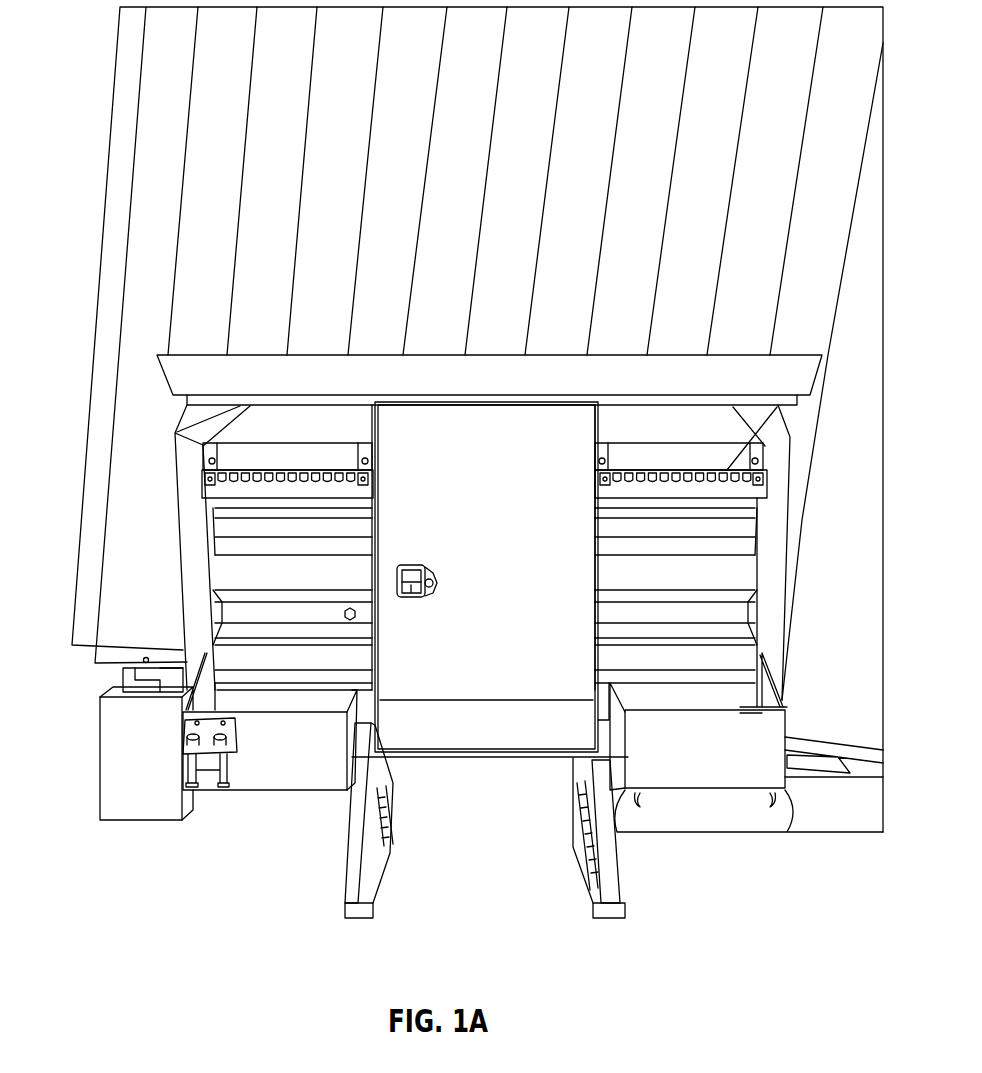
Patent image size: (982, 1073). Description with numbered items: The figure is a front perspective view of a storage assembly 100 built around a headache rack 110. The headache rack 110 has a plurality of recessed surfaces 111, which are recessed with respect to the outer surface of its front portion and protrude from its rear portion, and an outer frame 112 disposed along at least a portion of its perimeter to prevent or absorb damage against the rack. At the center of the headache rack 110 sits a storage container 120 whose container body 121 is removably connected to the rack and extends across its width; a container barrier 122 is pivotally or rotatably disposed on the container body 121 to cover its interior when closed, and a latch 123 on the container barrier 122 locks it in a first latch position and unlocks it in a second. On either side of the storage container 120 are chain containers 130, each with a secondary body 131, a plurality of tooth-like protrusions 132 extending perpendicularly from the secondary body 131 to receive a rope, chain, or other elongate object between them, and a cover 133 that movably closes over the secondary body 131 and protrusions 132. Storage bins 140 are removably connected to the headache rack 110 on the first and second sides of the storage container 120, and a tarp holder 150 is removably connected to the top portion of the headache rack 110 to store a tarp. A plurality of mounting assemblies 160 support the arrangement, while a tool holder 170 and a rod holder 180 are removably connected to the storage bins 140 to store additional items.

The storage assembly 100 is at (214, 224).
The headache rack 110 is at (233, 547).
The recessed surfaces 111 is at (233, 510).
The outer frame 112 is at (780, 462).
The storage container 120 is at (538, 764).
The container body 121 is at (453, 758).
The container barrier 122 is at (477, 727).
The latch 123 is at (410, 600).
The chain containers 130 is at (196, 477).
The secondary body 131 is at (215, 486).
The protrusions 132 is at (220, 455).
The cover 133 is at (263, 452).
The storage bins 140 is at (263, 773).
The tarp holder 150 is at (423, 360).
The mounting assemblies 160 is at (352, 861).
The tool holder 170 is at (185, 747).
The rod holder 180 is at (750, 812).